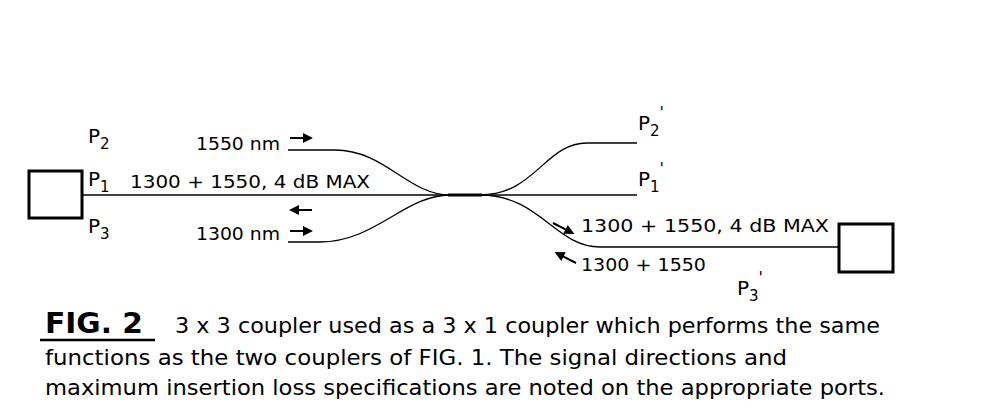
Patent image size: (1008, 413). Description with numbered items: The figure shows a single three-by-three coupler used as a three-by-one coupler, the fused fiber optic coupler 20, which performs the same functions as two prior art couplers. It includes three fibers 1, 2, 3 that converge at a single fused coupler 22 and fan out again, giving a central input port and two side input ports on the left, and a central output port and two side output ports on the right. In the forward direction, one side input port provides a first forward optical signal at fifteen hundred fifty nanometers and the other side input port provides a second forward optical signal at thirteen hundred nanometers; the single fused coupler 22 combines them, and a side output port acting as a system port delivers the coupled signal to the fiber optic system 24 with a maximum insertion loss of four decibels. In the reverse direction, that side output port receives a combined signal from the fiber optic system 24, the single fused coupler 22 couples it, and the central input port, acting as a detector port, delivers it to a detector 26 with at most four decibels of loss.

The fused fiber optic coupler 20 is at (493, 111).
The single fused coupler 22 is at (465, 206).
The fiber optic system 24 is at (857, 223).
The detector 26 is at (62, 169).
The fiber 1 is at (396, 197).
The fiber 2 is at (375, 161).
The fiber 3 is at (322, 245).